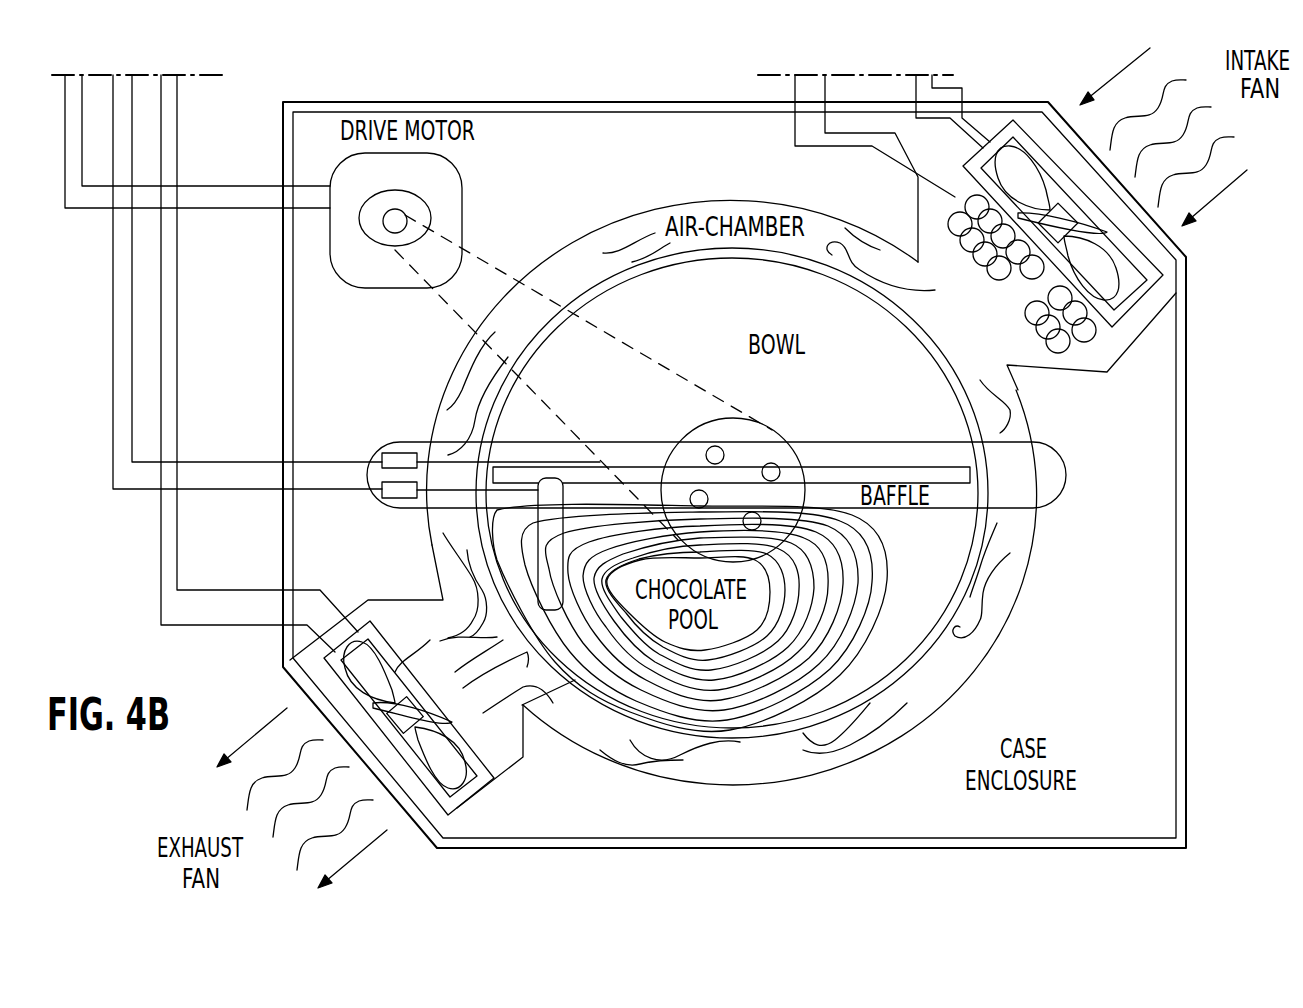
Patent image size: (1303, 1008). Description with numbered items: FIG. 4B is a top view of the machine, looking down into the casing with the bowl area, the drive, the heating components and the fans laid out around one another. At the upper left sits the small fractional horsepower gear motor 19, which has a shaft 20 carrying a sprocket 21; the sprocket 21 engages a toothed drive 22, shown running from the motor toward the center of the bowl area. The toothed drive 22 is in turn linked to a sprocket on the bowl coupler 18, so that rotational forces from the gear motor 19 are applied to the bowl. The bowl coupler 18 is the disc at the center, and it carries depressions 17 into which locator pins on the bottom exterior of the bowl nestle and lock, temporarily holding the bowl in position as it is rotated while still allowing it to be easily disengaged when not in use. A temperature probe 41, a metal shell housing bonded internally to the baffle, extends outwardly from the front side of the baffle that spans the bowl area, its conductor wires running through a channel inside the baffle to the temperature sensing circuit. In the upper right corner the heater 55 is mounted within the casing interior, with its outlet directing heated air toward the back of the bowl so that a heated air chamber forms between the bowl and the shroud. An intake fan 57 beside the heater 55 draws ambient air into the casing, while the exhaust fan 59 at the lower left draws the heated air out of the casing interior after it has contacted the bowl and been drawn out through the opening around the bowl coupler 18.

The depressions 17 is at (775, 448).
The bowl coupler 18 is at (781, 468).
The gear motor 19 is at (462, 210).
The shaft 20 is at (397, 220).
The sprocket 21 is at (393, 247).
The toothed drive 22 is at (497, 257).
The temperature probe 41 is at (556, 477).
The heater 55 is at (1113, 353).
The intake fan 57 is at (1168, 283).
The exhaust fan 59 is at (455, 800).